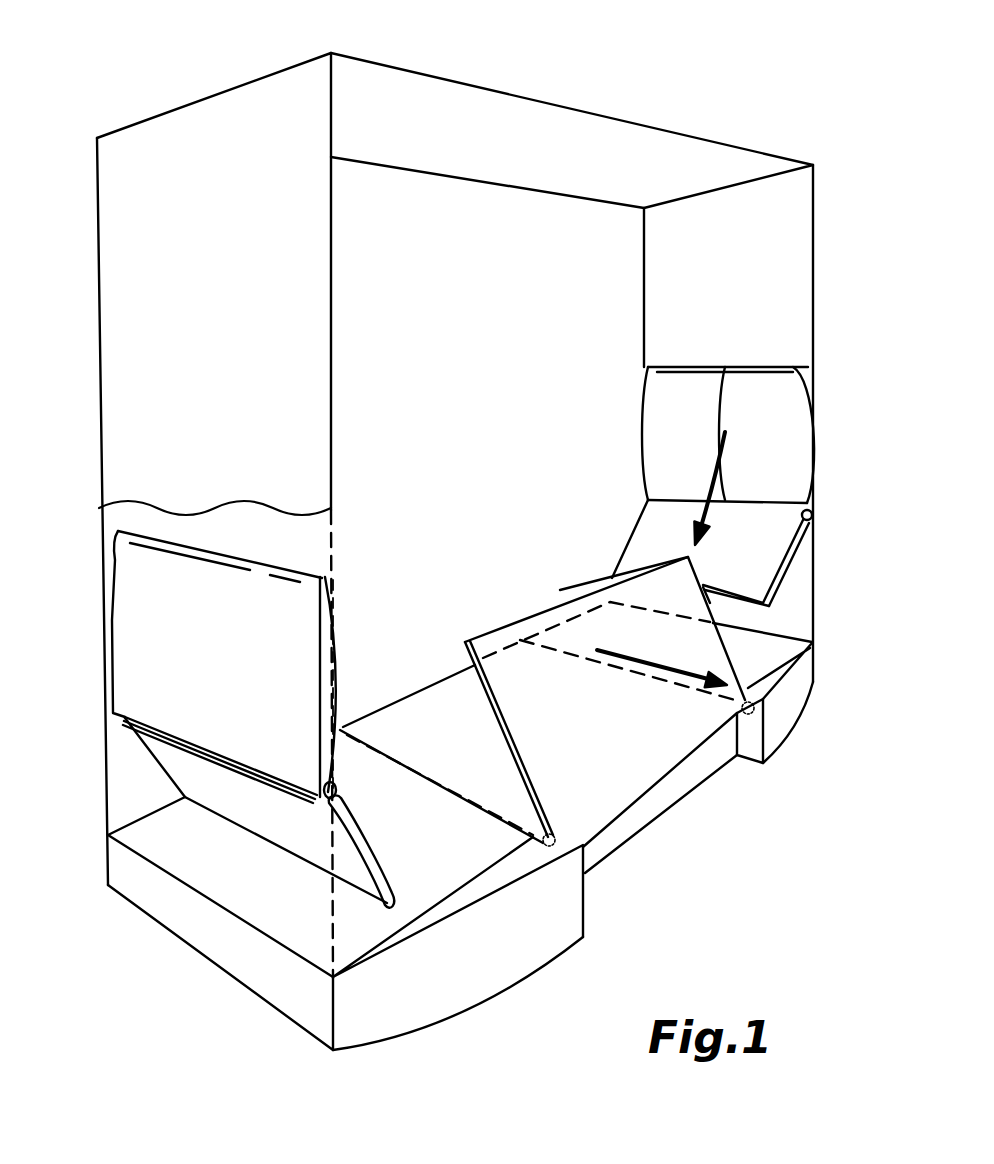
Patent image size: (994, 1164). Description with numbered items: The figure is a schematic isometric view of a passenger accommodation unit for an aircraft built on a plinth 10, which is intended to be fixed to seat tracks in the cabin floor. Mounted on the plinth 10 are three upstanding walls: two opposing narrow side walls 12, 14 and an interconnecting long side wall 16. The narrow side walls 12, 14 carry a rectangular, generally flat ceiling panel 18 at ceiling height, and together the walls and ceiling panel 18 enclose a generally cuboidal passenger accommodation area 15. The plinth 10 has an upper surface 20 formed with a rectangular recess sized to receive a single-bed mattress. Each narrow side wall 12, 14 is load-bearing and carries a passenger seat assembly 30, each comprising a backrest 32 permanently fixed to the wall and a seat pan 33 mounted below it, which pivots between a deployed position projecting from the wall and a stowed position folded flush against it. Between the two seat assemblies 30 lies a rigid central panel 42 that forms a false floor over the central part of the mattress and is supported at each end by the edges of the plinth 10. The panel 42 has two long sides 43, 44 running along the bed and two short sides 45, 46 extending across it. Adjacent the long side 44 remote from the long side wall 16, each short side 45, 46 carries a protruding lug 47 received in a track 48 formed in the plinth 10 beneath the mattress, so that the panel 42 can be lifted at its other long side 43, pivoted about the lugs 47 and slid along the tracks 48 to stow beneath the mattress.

The plinth 10 is at (257, 965).
The narrow side wall 12 is at (228, 412).
The narrow side wall 14 is at (730, 273).
The passenger accommodation area 15 is at (516, 412).
The long side wall 16 is at (440, 230).
The ceiling panel 18 is at (613, 160).
The upper surface 20 is at (593, 806).
The passenger seat assembly 30 is at (270, 654).
The backrest 32 is at (340, 680).
The seat pan 33 is at (375, 862).
The central panel 42 is at (510, 632).
The long side 43 is at (572, 600).
The long side 44 is at (690, 757).
The short side 45 is at (500, 737).
The short side 46 is at (717, 607).
The lug 47 is at (740, 710).
The track 48 is at (633, 673).